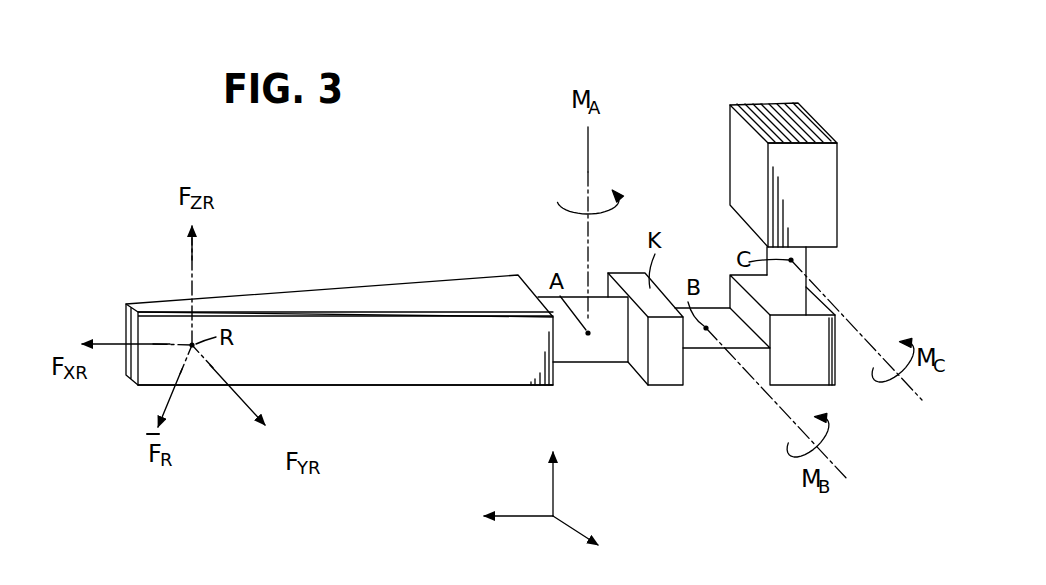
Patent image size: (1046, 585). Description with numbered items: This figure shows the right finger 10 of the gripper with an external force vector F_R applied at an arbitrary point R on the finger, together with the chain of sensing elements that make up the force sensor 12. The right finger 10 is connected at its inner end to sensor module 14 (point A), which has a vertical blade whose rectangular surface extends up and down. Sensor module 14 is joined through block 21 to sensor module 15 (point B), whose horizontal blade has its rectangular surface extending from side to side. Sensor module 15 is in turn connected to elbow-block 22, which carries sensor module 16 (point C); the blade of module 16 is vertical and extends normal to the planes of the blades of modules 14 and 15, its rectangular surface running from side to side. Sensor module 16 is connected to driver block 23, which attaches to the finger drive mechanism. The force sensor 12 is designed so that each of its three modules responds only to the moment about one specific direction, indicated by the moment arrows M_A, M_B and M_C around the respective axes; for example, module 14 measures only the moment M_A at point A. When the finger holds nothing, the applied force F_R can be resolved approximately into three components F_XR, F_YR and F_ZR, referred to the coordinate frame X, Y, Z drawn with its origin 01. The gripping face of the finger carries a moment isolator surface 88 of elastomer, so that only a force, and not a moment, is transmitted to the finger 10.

The right finger 10 is at (397, 292).
The moment isolator surface 88 is at (397, 377).
The sensor module 14 is at (602, 353).
The block 21 is at (662, 372).
The sensor module 15 is at (706, 351).
The elbow-block 22 is at (813, 367).
The sensor module 16 is at (807, 262).
The driver block 23 is at (826, 192).
The force sensor 12 is at (690, 152).
The zero reference point 01 is at (557, 514).